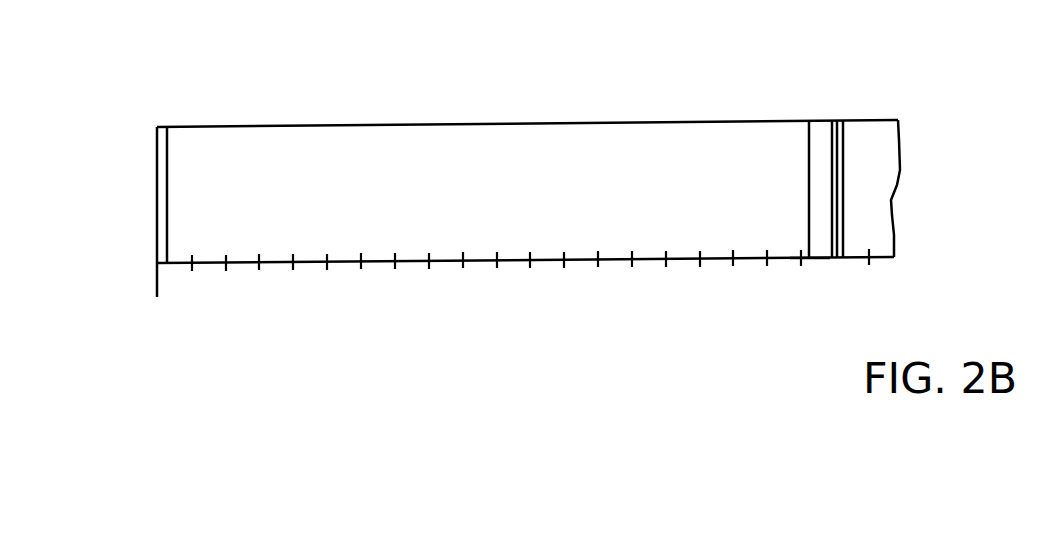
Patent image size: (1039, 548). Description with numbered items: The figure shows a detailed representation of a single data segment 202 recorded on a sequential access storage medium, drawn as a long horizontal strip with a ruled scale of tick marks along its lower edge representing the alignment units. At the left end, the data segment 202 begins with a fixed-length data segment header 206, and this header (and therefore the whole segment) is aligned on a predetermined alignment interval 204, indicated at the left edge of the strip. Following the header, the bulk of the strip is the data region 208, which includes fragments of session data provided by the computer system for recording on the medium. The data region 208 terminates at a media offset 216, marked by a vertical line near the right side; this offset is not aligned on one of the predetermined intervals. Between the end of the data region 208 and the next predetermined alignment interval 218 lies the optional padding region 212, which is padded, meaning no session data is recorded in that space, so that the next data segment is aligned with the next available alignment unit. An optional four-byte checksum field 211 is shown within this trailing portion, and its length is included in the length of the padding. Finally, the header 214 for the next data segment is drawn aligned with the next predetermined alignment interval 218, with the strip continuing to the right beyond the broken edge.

The data segment 202 is at (717, 342).
The predetermined alignment interval 204 is at (158, 280).
The data segment header 206 is at (161, 125).
The data region 208 is at (395, 123).
The checksum field 211 is at (833, 259).
The padding region 212 is at (810, 119).
The header for the next data segment 214 is at (838, 119).
The media offset 216 is at (810, 259).
The next predetermined alignment interval 218 is at (837, 259).